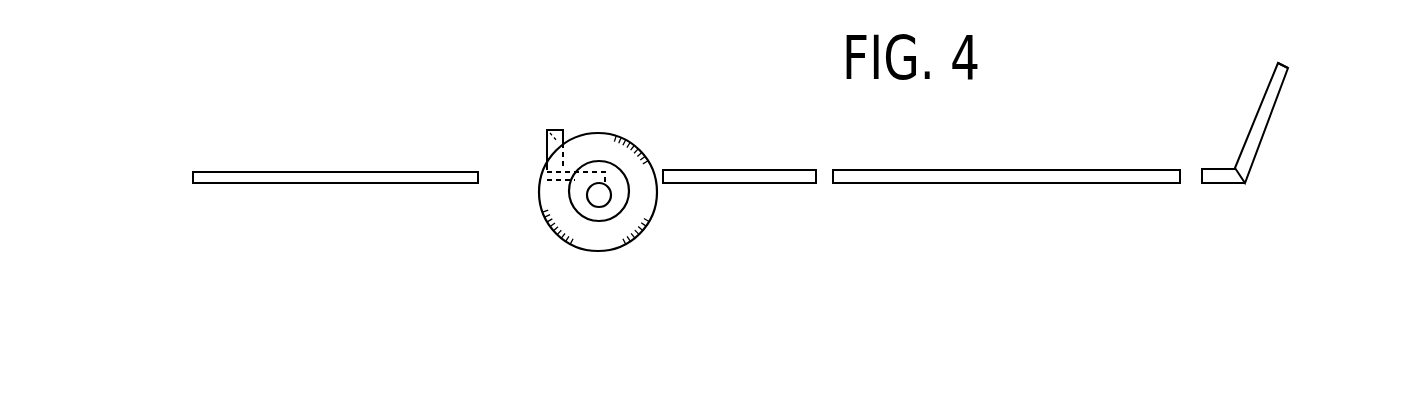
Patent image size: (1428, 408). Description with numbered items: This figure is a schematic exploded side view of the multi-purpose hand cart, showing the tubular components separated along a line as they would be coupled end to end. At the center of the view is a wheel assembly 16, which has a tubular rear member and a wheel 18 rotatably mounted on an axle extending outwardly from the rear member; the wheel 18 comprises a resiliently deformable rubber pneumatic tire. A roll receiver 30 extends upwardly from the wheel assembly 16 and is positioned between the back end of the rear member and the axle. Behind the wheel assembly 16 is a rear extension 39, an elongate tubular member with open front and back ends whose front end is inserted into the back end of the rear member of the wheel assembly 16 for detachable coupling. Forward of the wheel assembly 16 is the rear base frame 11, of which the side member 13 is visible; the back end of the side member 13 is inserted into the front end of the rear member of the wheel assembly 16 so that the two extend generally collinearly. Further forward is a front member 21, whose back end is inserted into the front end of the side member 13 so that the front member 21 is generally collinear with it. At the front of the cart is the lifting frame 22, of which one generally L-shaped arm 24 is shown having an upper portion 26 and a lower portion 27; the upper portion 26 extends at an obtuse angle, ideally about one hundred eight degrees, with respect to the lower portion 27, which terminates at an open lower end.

The rear base frame 11 is at (754, 135).
The side member 13 is at (783, 170).
The wheel assembly 16 is at (627, 142).
The wheel 18 is at (647, 157).
The front member 21 is at (948, 170).
The lifting frame 22 is at (1260, 103).
The arm 24 is at (1288, 80).
The upper portion 26 is at (1278, 102).
The lower portion 27 is at (1218, 168).
The roll receiver 30 is at (538, 129).
The rear extension 39 is at (323, 172).